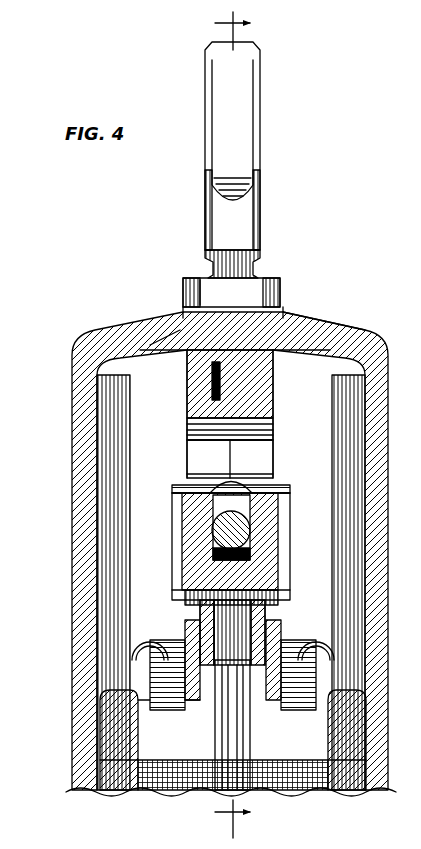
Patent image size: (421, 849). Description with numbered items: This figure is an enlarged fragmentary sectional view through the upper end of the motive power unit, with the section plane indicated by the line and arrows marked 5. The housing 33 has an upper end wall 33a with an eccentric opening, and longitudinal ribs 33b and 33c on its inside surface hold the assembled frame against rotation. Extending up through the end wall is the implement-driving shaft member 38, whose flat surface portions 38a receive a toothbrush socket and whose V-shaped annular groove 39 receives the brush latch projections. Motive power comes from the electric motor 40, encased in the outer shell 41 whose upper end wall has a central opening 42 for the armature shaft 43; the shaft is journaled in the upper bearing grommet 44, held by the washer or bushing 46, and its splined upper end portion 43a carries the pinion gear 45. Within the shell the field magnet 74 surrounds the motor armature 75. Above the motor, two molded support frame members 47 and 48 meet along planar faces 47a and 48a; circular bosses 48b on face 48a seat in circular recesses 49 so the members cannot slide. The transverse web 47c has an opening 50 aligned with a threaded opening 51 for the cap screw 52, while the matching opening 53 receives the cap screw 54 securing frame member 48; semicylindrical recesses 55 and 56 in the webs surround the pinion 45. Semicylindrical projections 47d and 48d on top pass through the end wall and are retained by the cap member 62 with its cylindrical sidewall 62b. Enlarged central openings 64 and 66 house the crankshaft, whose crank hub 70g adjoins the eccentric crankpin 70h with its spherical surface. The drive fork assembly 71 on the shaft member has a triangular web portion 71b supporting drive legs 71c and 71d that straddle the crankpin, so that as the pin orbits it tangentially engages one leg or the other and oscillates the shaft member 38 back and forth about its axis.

The section line 5- 5 is at (245, 429).
The housing 33 is at (70, 357).
The upper end wall 33a is at (318, 330).
The longitudinal rib 33b is at (112, 522).
The longitudinal rib 33c is at (330, 510).
The shaft member 38 is at (258, 138).
The flat surface portions 38a is at (248, 94).
The V-shaped annular groove 39 is at (258, 264).
The electric motor 40 is at (100, 791).
The outer shell 41 is at (104, 750).
The central opening 42 is at (252, 715).
The armature shaft 43 is at (230, 772).
The splined upper end portion 43a is at (280, 547).
The upper bearing grommet 44 is at (163, 775).
The pinion gear 45 is at (270, 610).
The washer or bushing 46 is at (180, 677).
The support frame member 47 is at (165, 347).
The planar face 47a is at (198, 442).
The transverse base or web 47c is at (152, 650).
The semicylindrical projection 47d is at (181, 304).
The support frame member 48 is at (302, 332).
The planar face 48a is at (272, 434).
The circular bosses or keys 48b is at (209, 392).
The semicylindrical projection 48d is at (287, 312).
The circular recesses 49 is at (175, 335).
The opening 50 is at (160, 665).
The threaded opening 51 is at (148, 712).
The cap screw 52 is at (150, 636).
The opening 53 is at (340, 645).
The cap screw 54 is at (335, 625).
The semicylindrical recess 55 is at (200, 620).
The semicylindrical recess 56 is at (265, 628).
The cap member 62 is at (281, 275).
The cylindrical sidewall 62b is at (190, 292).
The enlarged central opening 64 is at (188, 428).
The enlarged central opening 66 is at (275, 428).
The crank hub 70g is at (224, 486).
The crankpin 70h is at (246, 528).
The drive fork assembly 71 is at (181, 513).
The triangular web portion 71b is at (185, 572).
The drive leg 71c is at (181, 500).
The drive leg 71d is at (290, 520).
The field magnet 74 is at (328, 786).
The motor armature 75 is at (270, 784).